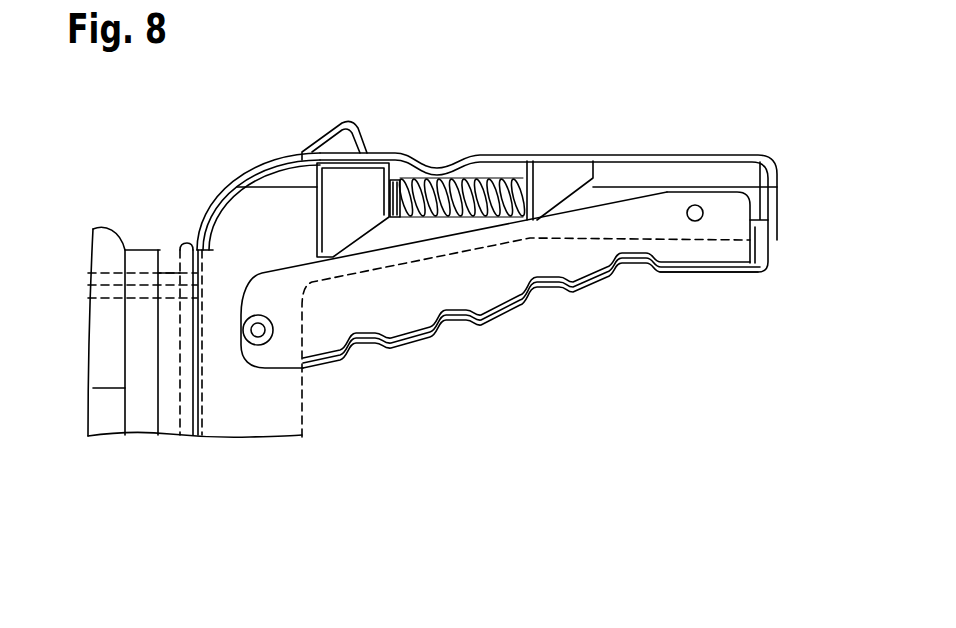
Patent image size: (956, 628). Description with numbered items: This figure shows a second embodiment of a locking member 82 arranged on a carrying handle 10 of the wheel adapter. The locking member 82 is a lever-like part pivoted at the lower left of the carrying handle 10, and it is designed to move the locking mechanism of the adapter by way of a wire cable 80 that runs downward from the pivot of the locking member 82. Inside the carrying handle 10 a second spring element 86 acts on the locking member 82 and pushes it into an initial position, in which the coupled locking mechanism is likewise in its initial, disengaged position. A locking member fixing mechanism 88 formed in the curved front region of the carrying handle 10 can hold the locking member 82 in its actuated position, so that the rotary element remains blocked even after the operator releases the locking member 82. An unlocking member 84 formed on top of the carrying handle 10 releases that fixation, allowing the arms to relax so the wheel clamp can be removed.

The carrying handle 10 is at (610, 106).
The wire cable 80 is at (258, 337).
The locking member 82 is at (534, 334).
The unlocking member 84 is at (348, 117).
The second spring element 86 is at (460, 160).
The locking member fixing mechanism 88 is at (276, 221).